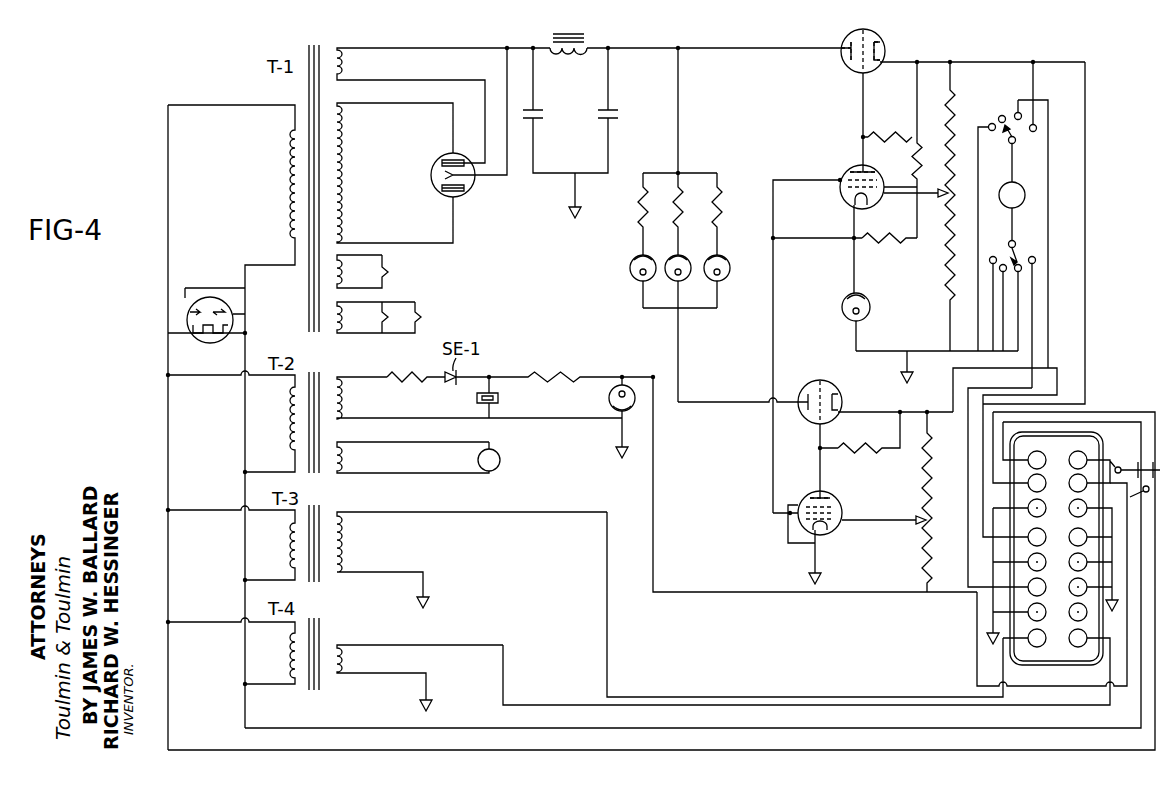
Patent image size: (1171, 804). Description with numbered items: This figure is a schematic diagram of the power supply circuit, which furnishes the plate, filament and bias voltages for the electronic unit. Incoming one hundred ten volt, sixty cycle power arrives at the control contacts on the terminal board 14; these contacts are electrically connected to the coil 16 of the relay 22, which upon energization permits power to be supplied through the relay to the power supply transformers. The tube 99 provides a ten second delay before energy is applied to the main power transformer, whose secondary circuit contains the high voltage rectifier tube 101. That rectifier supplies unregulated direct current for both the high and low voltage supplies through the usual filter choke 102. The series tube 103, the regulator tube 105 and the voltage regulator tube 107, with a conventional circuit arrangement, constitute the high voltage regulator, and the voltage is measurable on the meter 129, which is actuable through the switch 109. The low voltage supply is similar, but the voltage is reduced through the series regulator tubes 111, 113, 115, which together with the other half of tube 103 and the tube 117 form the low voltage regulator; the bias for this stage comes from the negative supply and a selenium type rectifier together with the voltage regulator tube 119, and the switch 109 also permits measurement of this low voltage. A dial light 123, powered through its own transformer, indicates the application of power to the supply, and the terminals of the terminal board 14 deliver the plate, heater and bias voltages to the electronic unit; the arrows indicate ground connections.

The time delay tube 99 is at (232, 308).
The high voltage rectifier tube 101 is at (431, 176).
The filter choke 102 is at (588, 44).
The series tube 103 is at (886, 47).
The regulator tube 105 is at (848, 171).
The voltage regulator tube 107 is at (870, 307).
The switch 109 is at (1008, 142).
The series regulator tube 111 is at (632, 280).
The series regulator tube 113 is at (667, 279).
The series regulator tube 115 is at (707, 279).
The regulator tube 117 is at (838, 500).
The voltage regulator tube 119 is at (609, 398).
The dial light 123 is at (500, 460).
The meter 129 is at (1021, 184).
The terminal board 14 is at (1075, 445).
The coil 16 is at (1118, 466).
The relay 22 is at (1142, 495).